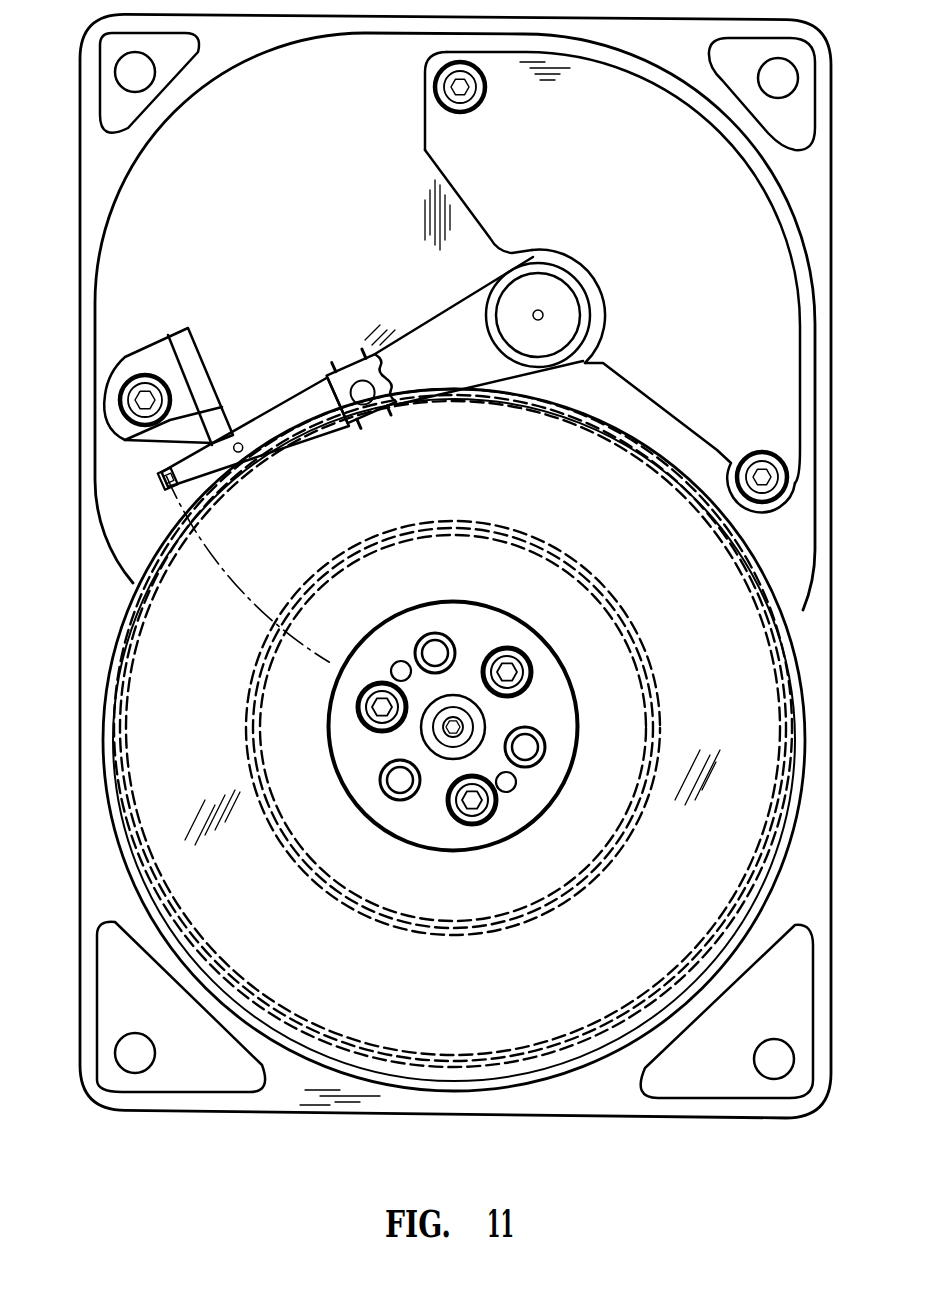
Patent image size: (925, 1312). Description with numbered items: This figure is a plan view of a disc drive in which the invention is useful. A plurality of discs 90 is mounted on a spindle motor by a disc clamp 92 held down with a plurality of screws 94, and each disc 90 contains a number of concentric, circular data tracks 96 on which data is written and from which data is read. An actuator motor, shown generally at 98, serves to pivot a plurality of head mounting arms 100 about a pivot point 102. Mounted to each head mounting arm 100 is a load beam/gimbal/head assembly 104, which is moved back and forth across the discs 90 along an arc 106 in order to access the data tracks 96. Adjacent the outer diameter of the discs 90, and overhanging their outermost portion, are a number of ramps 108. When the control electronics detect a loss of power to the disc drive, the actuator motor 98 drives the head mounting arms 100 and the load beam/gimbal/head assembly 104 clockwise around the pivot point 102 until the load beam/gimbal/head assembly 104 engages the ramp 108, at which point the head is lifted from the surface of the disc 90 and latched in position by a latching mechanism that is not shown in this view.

The disc 90 is at (512, 1000).
The disc clamp 92 is at (565, 672).
The screws 94 is at (472, 823).
The data tracks 96 is at (315, 1027).
The actuator motor 98 is at (805, 350).
The head mounting arms 100 is at (400, 343).
The pivot point 102 is at (538, 315).
The load beam/gimbal/head assembly 104 is at (160, 478).
The arc 106 is at (228, 577).
The ramps 108 is at (222, 402).